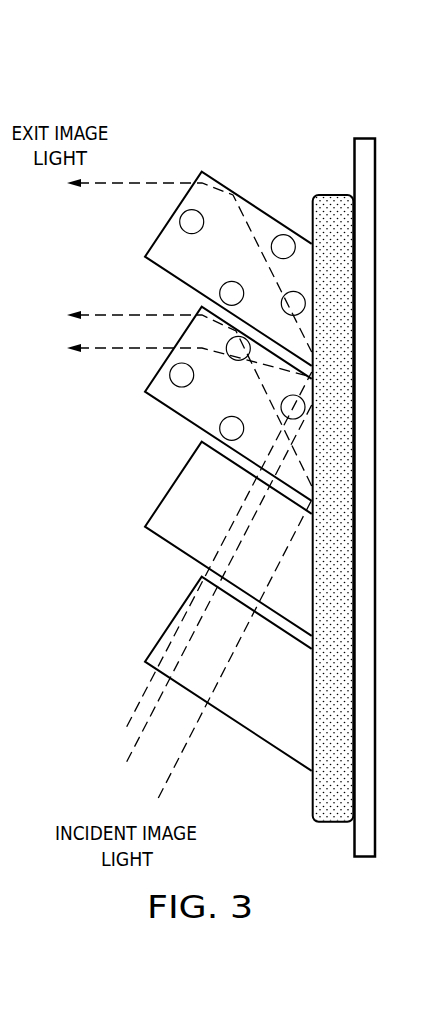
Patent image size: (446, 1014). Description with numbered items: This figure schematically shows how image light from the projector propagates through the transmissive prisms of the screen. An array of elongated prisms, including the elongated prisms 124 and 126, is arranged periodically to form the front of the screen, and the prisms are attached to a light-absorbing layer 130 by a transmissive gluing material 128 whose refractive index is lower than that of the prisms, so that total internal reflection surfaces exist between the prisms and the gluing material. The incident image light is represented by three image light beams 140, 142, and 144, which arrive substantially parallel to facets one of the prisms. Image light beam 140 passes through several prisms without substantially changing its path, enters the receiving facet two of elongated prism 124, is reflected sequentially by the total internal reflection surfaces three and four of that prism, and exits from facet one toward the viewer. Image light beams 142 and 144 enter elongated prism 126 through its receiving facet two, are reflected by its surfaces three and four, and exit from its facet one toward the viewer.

The elongated prism 124 is at (163, 228).
The elongated prism 126 is at (152, 377).
The gluing material 128 is at (327, 194).
The light-absorbing layer 130 is at (375, 177).
The image light beam 140 is at (141, 700).
The image light beam 142 is at (131, 756).
The image light beam 144 is at (173, 768).